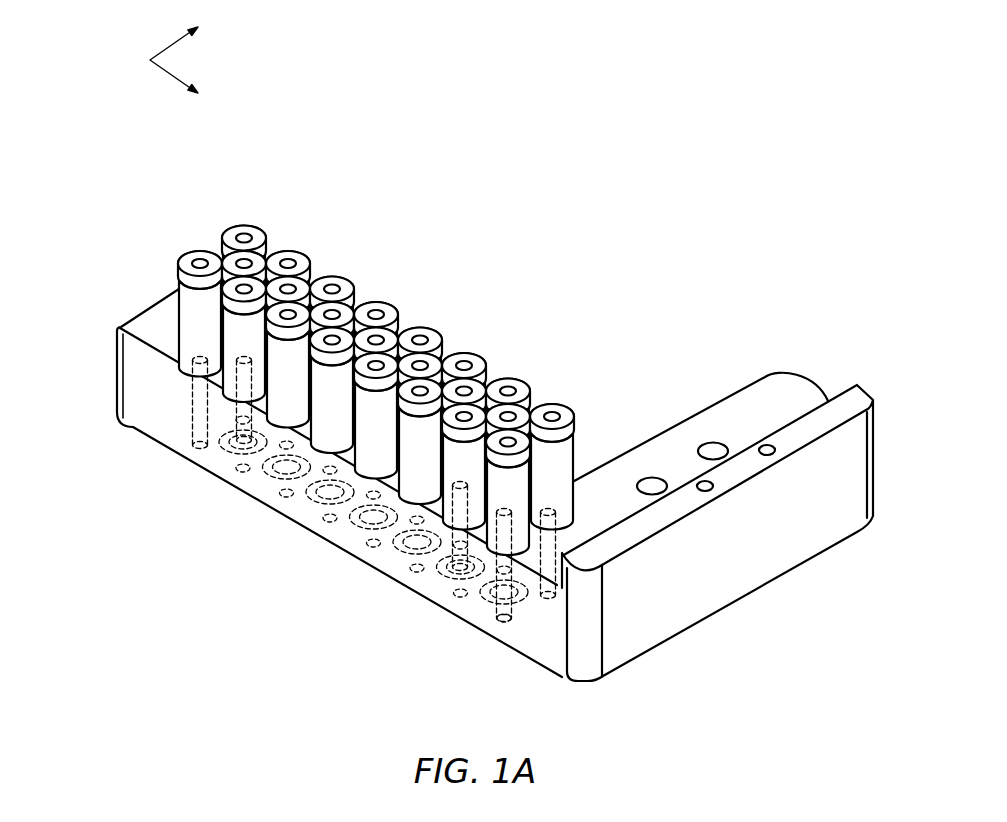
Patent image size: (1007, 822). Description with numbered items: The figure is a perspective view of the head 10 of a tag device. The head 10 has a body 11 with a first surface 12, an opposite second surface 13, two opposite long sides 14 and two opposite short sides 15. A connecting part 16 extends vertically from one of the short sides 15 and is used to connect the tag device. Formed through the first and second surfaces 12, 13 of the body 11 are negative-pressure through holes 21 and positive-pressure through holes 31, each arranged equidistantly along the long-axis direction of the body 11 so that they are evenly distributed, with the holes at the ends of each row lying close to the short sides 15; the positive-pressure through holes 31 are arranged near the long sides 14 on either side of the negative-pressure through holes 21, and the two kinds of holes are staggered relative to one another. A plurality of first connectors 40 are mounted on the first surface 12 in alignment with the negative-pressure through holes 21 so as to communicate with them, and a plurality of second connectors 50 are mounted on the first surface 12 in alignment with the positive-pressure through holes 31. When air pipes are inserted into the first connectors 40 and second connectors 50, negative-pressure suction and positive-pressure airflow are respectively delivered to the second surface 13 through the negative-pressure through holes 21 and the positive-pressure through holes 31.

The head 10 is at (601, 212).
The body 11 is at (107, 381).
The first surface 12 is at (119, 328).
The second surface 13 is at (292, 521).
The long sides 14 is at (369, 547).
The short sides 15 is at (133, 314).
The connecting part 16 is at (757, 396).
The negative-pressure through holes 21 is at (238, 447).
The positive-pressure through holes 31 is at (240, 427).
The first connectors 40 is at (258, 262).
The second connectors 50 is at (190, 309).